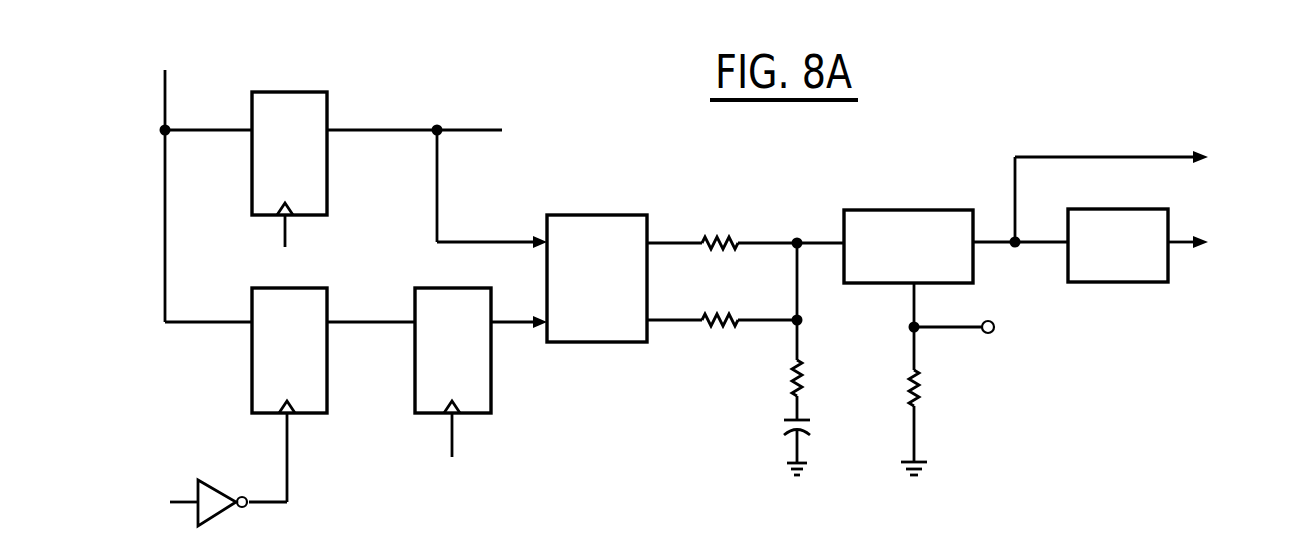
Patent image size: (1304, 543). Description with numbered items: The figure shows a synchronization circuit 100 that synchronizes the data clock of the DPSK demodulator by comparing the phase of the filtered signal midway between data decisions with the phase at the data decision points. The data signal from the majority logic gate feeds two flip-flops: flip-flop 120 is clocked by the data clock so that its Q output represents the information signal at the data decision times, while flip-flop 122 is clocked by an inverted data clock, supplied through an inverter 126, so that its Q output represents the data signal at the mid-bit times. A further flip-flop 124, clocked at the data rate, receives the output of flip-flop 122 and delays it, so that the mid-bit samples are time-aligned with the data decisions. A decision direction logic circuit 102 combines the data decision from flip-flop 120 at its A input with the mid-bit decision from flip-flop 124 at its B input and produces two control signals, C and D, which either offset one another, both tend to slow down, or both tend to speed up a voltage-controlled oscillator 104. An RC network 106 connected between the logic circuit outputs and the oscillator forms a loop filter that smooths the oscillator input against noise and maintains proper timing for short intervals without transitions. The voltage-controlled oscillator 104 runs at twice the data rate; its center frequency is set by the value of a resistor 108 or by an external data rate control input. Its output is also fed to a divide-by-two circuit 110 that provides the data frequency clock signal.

The synchronization circuit 100 is at (1043, 105).
The decision direction logic circuit 102 is at (602, 215).
The voltage-controlled oscillator 104 is at (880, 210).
The RC network 106 is at (811, 359).
The resistor 108 is at (923, 403).
The divide-by-two circuit 110 is at (1168, 282).
The flip-flop 120 is at (327, 110).
The flip-flop 122 is at (252, 368).
The flip-flop 124 is at (491, 380).
The inverter 126 is at (222, 513).